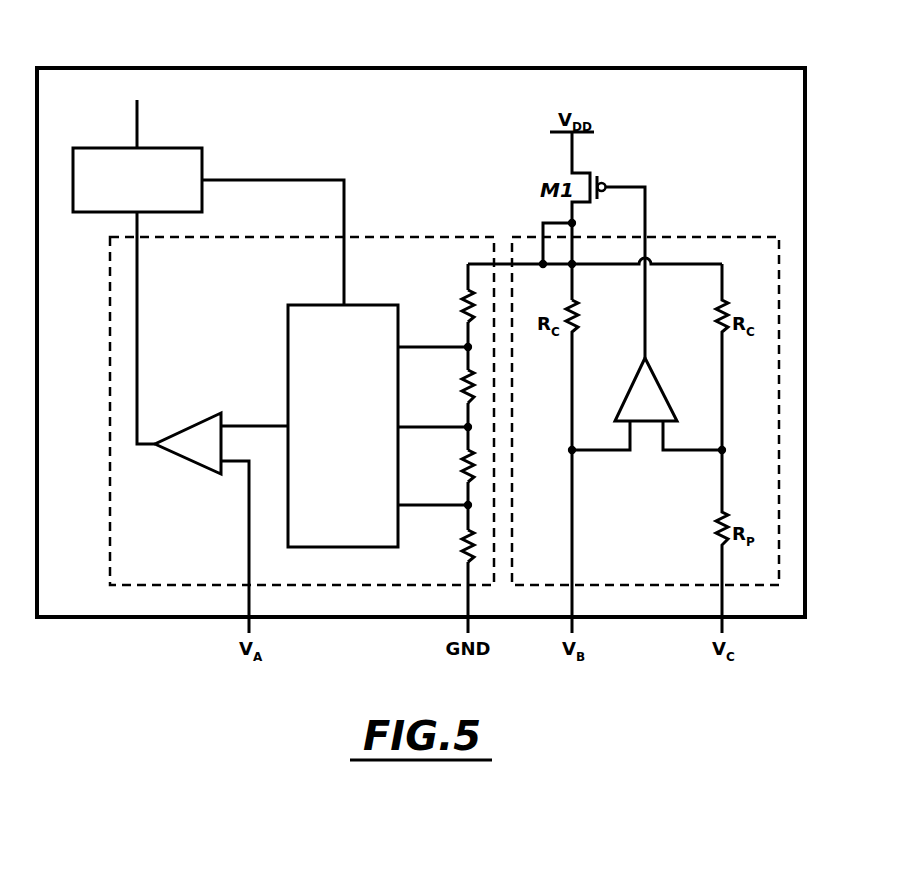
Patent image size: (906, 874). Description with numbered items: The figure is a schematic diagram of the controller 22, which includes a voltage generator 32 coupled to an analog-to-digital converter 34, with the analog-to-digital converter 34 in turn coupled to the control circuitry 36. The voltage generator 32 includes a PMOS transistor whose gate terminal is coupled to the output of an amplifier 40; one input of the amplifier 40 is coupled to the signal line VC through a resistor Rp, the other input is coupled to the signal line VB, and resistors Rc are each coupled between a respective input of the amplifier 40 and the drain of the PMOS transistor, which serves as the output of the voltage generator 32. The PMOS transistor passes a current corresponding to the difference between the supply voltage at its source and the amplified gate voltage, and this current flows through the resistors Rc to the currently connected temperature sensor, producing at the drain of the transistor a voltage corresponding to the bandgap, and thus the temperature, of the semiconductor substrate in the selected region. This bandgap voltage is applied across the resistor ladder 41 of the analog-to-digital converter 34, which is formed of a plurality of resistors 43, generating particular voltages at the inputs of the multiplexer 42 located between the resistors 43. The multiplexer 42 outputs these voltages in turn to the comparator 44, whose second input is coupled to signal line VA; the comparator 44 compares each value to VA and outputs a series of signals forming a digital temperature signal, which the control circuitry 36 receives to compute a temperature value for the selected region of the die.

The controller 22 is at (106, 42).
The control circuitry 36 is at (104, 147).
The analog-to-digital converter 34 is at (425, 232).
The voltage generator 32 is at (733, 232).
The multiplexer 42 is at (287, 321).
The comparator 44 is at (191, 428).
The resistor ladder 41 is at (435, 442).
The resistors 43 is at (460, 318).
The amplifier 40 is at (627, 392).